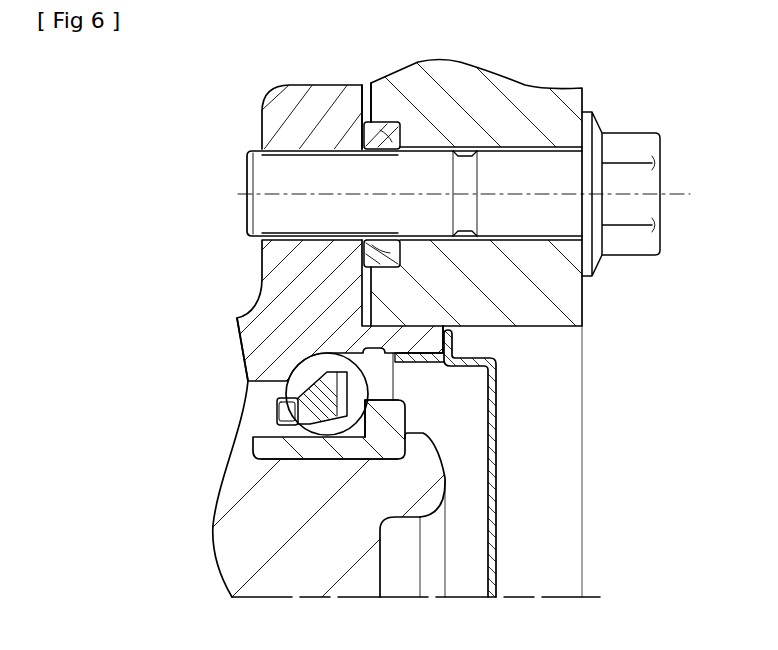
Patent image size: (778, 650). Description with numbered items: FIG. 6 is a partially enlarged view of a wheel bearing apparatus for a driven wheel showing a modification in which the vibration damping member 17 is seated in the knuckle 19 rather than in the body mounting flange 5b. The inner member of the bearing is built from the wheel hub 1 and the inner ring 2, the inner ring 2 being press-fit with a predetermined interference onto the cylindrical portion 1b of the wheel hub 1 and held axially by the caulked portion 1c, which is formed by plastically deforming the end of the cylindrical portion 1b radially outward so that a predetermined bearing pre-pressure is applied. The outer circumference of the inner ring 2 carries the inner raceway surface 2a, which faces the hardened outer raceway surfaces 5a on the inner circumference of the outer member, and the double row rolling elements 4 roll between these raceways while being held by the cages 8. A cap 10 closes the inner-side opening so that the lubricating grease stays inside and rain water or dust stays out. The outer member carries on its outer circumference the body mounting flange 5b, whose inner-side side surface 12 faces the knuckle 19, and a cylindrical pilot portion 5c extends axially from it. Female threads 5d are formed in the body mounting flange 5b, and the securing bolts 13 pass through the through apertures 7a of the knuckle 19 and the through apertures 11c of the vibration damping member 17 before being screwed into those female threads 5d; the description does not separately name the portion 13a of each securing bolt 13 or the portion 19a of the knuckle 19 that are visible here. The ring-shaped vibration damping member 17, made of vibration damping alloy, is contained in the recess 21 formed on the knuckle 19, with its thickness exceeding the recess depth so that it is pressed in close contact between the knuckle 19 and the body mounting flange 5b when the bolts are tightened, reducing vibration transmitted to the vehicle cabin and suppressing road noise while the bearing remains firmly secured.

The wheel hub 1 is at (391, 325).
The cylindrical portion 1b is at (283, 460).
The caulked portion 1c is at (424, 440).
The inner ring 2 is at (312, 325).
The inner raceway surface 2a is at (327, 432).
The rolling elements 4 is at (322, 368).
The outer raceway surfaces 5a is at (300, 374).
The body mounting flange 5b is at (312, 120).
The cylindrical pilot portion 5c is at (418, 326).
The female threads 5d is at (288, 152).
The through apertures 7a is at (551, 237).
The cages 8 is at (277, 408).
The cap 10 is at (506, 550).
The through apertures 11c is at (386, 234).
The inner-side side surface 12 is at (362, 274).
The securing bolts 13 is at (446, 194).
The shank of bolt 13a is at (258, 214).
The vibration damping member 17 is at (372, 104).
The knuckle 19 is at (592, 102).
The groove 19a is at (373, 296).
The recess 21 is at (388, 128).